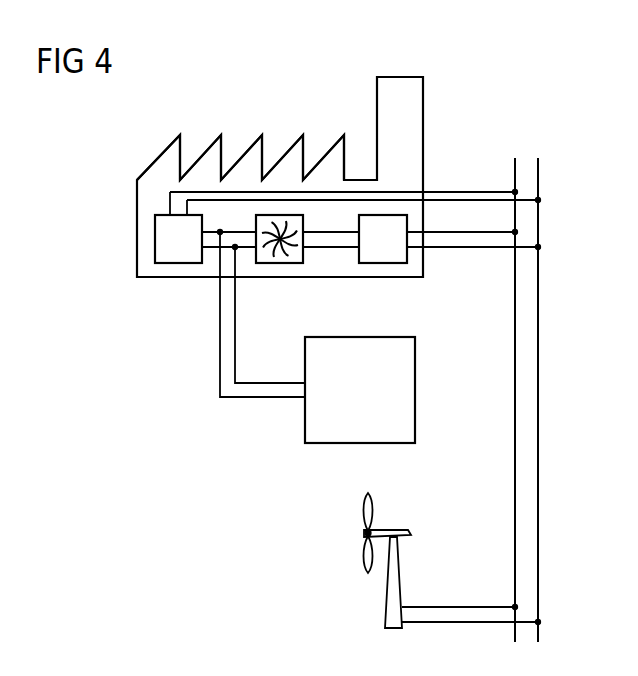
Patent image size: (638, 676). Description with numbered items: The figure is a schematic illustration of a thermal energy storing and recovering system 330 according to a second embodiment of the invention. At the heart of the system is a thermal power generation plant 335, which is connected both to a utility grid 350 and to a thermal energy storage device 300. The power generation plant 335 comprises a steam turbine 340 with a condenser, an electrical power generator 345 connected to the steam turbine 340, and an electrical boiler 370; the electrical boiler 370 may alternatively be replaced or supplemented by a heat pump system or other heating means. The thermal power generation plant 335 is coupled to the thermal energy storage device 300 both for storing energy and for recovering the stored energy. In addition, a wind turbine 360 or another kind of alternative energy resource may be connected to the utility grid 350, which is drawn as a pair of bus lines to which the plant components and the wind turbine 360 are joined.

The thermal energy storage device 300 is at (415, 385).
The thermal energy storing and recovering system 330 is at (128, 148).
The thermal power generation plant 335 is at (278, 135).
The steam turbine 340 is at (281, 263).
The electrical power generator 345 is at (384, 263).
The utility grid 350 is at (527, 152).
The wind turbine 360 is at (349, 532).
The electrical boiler 370 is at (179, 263).